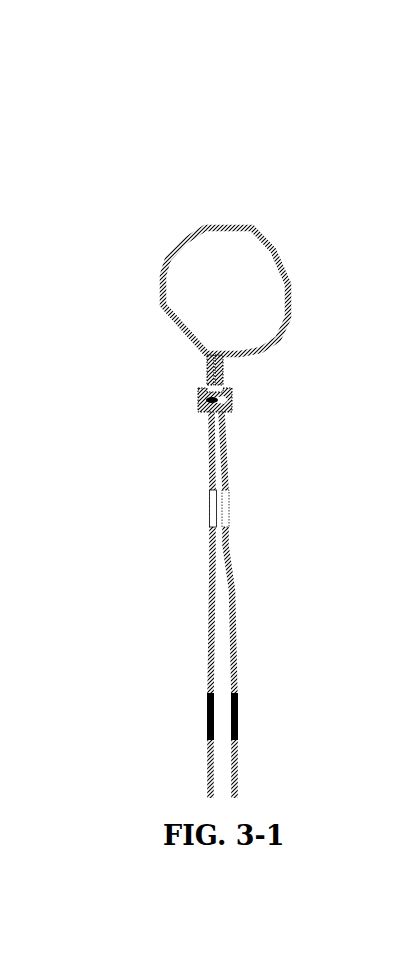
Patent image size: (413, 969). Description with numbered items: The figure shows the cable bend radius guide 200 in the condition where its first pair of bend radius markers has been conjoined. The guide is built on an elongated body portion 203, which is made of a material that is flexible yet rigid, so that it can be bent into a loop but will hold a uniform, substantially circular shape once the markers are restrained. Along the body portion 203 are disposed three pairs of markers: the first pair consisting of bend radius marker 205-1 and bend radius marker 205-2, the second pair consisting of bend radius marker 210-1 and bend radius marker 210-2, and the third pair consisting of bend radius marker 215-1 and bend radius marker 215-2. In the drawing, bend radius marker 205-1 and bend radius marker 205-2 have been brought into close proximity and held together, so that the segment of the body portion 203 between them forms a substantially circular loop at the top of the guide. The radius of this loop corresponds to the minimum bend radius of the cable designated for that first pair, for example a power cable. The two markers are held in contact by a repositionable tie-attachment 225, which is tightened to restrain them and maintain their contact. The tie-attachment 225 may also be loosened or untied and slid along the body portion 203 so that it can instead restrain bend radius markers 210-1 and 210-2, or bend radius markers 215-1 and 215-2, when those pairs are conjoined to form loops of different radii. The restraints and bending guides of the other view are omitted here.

The cable bend radius guide 200 is at (211, 152).
The body portion 203 is at (257, 236).
The bend radius marker 205-1 is at (207, 368).
The bend radius marker 205-2 is at (223, 370).
The repositionable tie-attachment 225 is at (232, 397).
The bend radius marker 210-1 is at (210, 508).
The bend radius marker 210-2 is at (227, 508).
The bend radius marker 215-1 is at (204, 720).
The bend radius marker 215-2 is at (240, 720).